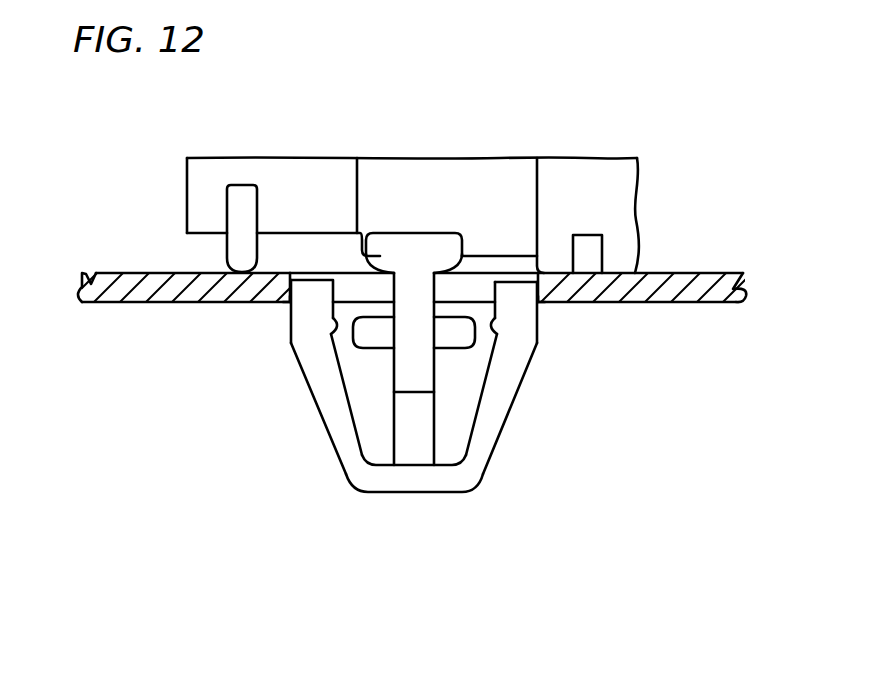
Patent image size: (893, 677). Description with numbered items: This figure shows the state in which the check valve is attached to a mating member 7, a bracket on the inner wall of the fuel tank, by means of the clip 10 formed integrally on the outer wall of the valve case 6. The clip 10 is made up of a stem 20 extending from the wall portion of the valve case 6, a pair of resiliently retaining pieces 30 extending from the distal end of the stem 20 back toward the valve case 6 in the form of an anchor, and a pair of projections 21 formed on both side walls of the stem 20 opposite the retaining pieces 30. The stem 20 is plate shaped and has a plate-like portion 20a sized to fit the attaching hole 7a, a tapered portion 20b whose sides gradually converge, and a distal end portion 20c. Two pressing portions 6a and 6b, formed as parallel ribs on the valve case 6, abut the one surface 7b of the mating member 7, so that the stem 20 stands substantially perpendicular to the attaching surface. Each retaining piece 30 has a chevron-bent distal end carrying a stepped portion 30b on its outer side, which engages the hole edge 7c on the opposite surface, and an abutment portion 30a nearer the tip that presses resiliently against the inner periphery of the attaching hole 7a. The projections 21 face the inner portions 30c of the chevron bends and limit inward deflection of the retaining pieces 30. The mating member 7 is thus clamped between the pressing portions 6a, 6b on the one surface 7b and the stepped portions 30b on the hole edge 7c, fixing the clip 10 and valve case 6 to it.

The valve case 6 is at (431, 167).
The pressing portion 6a is at (592, 247).
The pressing portion 6b is at (238, 255).
The mating member 7 is at (131, 272).
The attaching hole 7a is at (295, 300).
The one surface 7b is at (95, 272).
The hole edge 7c is at (290, 299).
The clip 10 is at (521, 482).
The stem 20 is at (480, 537).
The plate-like portion 20a is at (366, 487).
The tapered portion 20b is at (403, 443).
The distal end portion 20c is at (417, 486).
The projection 21 is at (366, 336).
The resiliently retaining piece 30 is at (330, 425).
The abutment portion 30a is at (293, 276).
The stepped portion 30b is at (290, 340).
The inner portion 30c is at (330, 330).